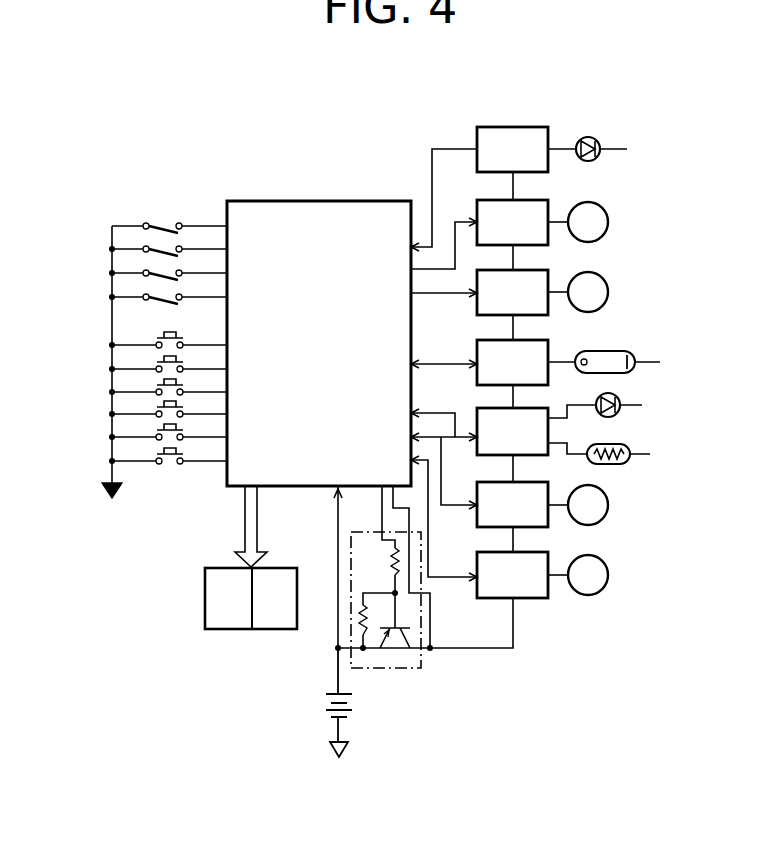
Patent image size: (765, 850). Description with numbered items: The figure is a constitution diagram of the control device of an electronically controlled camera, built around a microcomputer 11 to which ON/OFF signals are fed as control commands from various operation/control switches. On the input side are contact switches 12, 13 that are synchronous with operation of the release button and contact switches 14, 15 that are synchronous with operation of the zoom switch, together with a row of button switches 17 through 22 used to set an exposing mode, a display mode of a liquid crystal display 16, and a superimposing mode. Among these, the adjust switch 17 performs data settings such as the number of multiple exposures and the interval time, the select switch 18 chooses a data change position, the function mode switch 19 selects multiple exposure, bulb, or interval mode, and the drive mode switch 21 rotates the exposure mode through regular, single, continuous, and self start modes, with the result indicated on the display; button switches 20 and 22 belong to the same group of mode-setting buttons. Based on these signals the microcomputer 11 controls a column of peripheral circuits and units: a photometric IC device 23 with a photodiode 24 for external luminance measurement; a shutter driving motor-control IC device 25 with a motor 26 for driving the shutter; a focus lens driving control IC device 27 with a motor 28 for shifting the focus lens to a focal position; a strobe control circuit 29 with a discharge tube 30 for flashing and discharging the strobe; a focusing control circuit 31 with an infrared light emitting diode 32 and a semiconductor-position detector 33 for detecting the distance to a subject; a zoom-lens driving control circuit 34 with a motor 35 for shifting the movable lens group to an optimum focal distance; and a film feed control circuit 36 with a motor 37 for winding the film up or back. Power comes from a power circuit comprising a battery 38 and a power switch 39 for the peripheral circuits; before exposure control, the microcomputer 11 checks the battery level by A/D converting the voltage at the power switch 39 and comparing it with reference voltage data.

The microcomputer 11 is at (326, 202).
The contact switch 12 is at (172, 223).
The contact switch 13 is at (155, 251).
The contact switch 14 is at (155, 275).
The contact switch 15 is at (155, 299).
The liquid crystal display 16 is at (243, 630).
The adjust switch 17 is at (164, 336).
The select switch 18 is at (164, 360).
The function mode switch 19 is at (164, 383).
The button switch 20 is at (164, 405).
The drive mode switch 21 is at (164, 428).
The button switch 22 is at (164, 452).
The photometric IC device 23 is at (497, 127).
The photodiode 24 is at (590, 137).
The shutter driving motor-control IC device 25 is at (522, 200).
The motor 26 is at (607, 205).
The focus lens driving control IC device 27 is at (522, 270).
The motor 28 is at (607, 280).
The strobe control circuit 29 is at (522, 340).
The discharge tube 30 is at (605, 351).
The focusing control circuit 31 is at (522, 408).
The infrared light emitting diode 32 is at (619, 396).
The semiconductor-position detector 33 is at (615, 444).
The zoom-lens driving control circuit 34 is at (522, 482).
The motor 35 is at (609, 500).
The film feed control circuit 36 is at (523, 600).
The motor 37 is at (609, 572).
The battery 38 is at (352, 705).
The power switch 39 is at (405, 668).